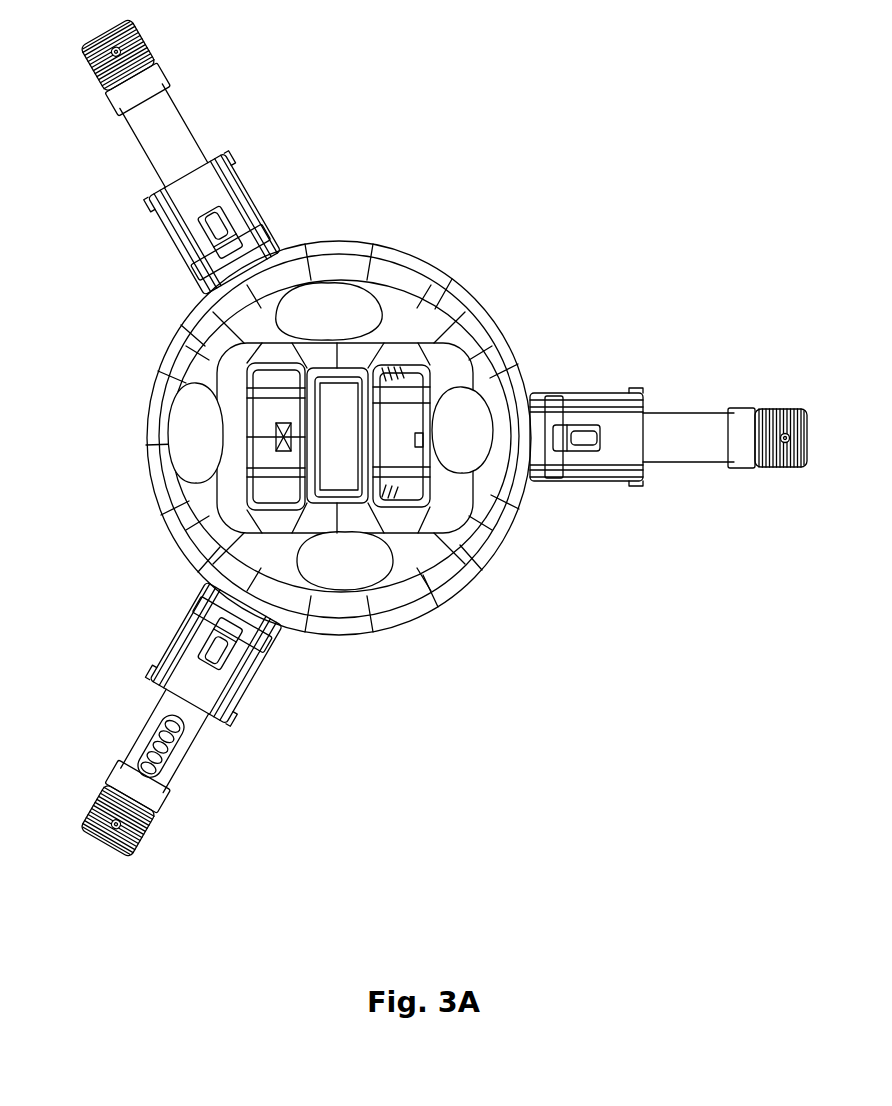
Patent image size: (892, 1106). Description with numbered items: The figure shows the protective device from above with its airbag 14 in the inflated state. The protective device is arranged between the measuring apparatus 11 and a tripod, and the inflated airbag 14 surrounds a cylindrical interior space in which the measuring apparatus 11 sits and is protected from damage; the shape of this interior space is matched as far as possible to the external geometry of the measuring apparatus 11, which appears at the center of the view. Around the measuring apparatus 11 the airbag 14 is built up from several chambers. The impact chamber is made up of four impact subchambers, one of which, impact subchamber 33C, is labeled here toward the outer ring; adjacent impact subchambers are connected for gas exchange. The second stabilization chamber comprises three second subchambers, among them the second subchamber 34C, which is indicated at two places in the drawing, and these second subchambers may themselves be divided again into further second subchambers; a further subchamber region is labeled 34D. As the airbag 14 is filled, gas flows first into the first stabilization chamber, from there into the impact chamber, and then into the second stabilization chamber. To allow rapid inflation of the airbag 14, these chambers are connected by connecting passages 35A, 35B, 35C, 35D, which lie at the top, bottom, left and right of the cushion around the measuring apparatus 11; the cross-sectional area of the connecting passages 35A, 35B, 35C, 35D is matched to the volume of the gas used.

The airbag 14 is at (404, 182).
The measuring apparatus 11 is at (388, 512).
The impact subchamber 33C is at (474, 310).
The second subchamber 34C is at (203, 517).
The rim segment 34D is at (167, 352).
The connecting passage 35A is at (160, 442).
The connecting passage 35B is at (343, 604).
The connecting passage 35C is at (490, 412).
The connecting passage 35D is at (327, 262).